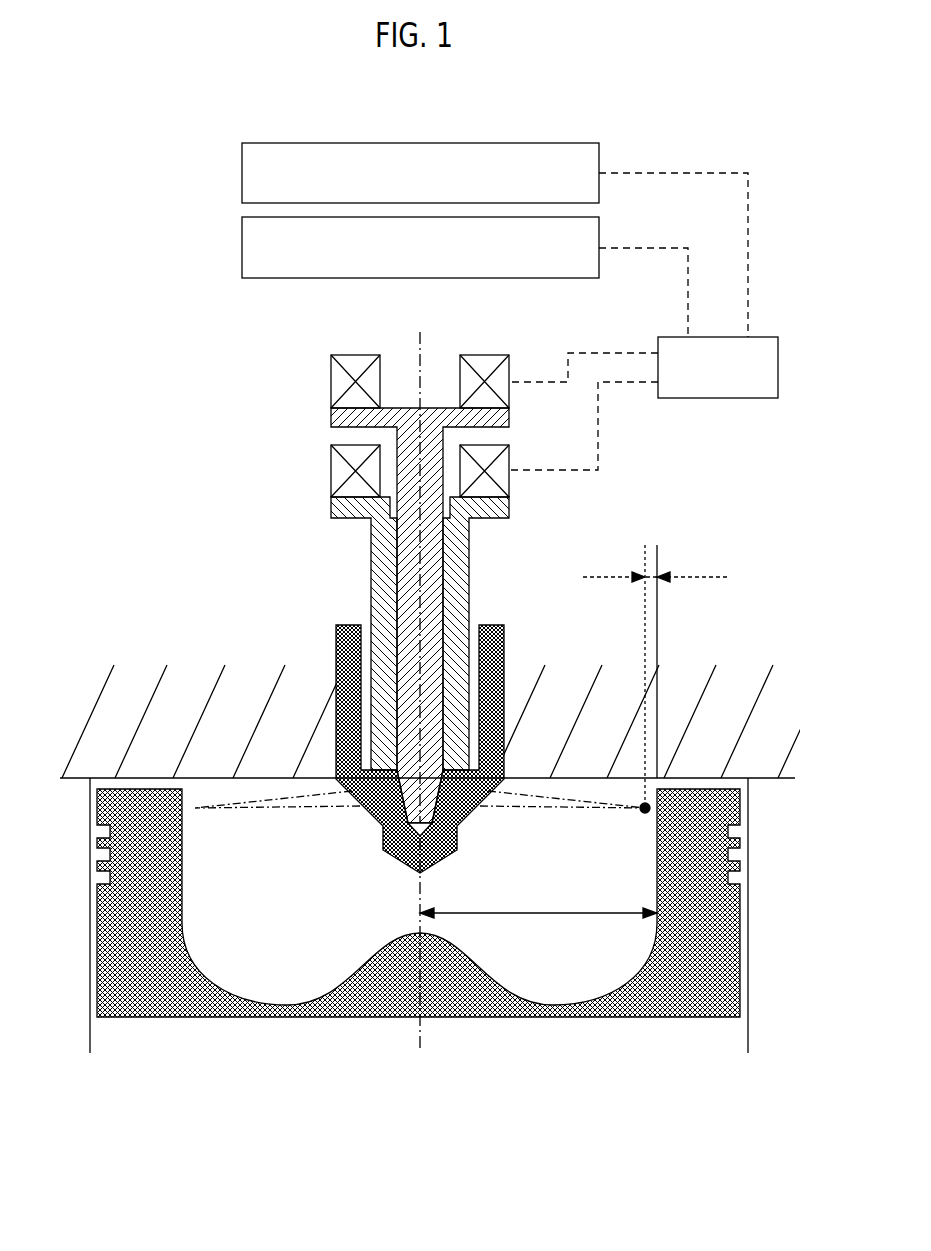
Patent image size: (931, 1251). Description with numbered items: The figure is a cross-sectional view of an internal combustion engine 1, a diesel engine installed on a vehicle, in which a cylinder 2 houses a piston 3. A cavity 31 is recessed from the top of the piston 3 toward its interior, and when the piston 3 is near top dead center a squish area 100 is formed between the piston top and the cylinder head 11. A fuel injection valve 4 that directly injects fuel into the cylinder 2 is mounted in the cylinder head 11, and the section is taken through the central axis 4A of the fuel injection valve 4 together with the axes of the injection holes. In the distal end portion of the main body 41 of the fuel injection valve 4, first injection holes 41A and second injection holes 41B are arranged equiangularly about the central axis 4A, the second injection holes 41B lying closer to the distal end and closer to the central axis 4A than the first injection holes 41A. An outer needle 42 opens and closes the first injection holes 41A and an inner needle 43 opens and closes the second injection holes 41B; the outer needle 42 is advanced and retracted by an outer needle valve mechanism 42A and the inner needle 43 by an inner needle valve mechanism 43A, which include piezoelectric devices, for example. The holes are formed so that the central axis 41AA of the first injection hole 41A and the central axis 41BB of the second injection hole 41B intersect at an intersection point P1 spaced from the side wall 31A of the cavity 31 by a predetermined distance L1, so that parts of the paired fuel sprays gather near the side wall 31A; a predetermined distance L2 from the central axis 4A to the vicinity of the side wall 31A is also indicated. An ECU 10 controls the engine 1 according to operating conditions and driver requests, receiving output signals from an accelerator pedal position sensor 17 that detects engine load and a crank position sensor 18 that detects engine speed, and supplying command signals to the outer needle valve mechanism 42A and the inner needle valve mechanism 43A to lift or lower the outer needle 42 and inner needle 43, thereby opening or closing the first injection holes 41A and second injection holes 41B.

The internal combustion engine 1 is at (152, 605).
The cylinder 2 is at (90, 1035).
The piston 3 is at (670, 988).
The fuel injection valve 4 is at (343, 599).
The central axis of the fuel injection valve 4A is at (420, 342).
The ECU 10 is at (717, 398).
The cylinder head 11 is at (747, 727).
The accelerator pedal position sensor 17 is at (242, 157).
The crank position sensor 18 is at (242, 233).
The cavity 31 is at (552, 965).
The side wall of the cavity 31A is at (657, 860).
The main body of the fuel injection valve 41 is at (336, 643).
The first injection hole 41A is at (510, 805).
The central axis of the first injection hole 41AA is at (523, 793).
The second injection hole 41B is at (486, 806).
The central axis of the second injection hole 41BB is at (552, 808).
The outer needle 42 is at (369, 568).
The outer needle valve mechanism 42A is at (331, 466).
The inner needle 43 is at (331, 418).
The inner needle valve mechanism 43A is at (331, 363).
The squish area 100 is at (687, 787).
The predetermined distance L1 is at (656, 673).
The predetermined distance L2 is at (538, 913).
The intersection point P1 is at (645, 808).